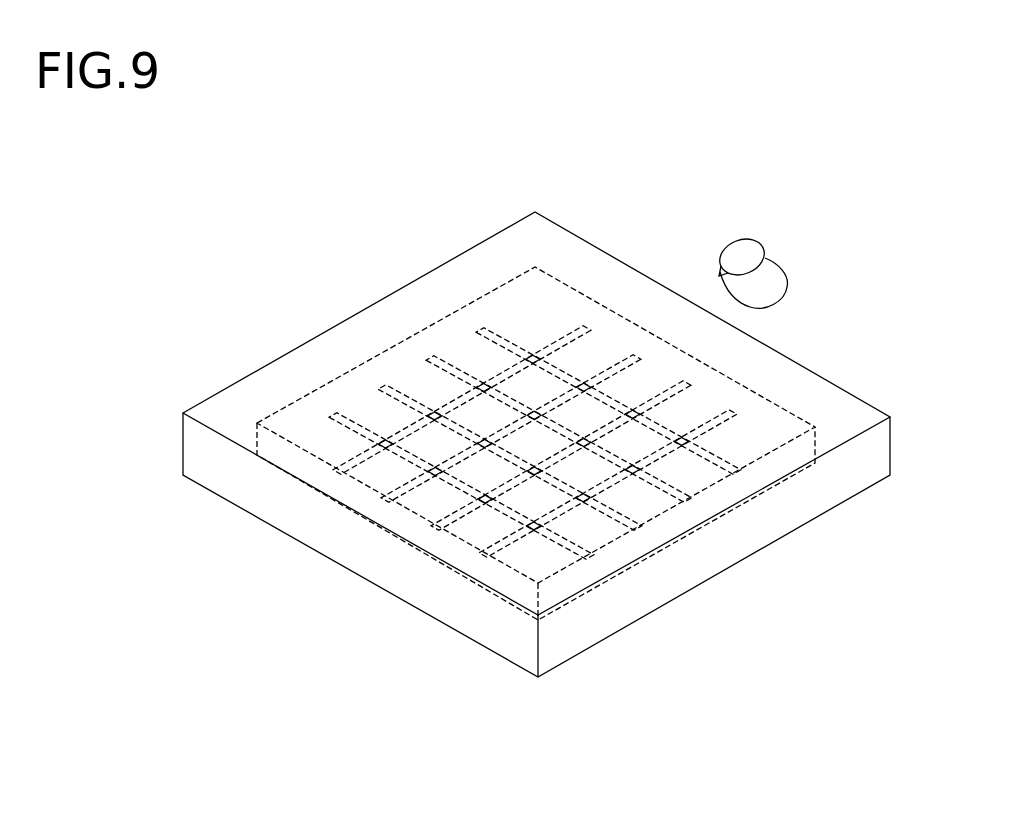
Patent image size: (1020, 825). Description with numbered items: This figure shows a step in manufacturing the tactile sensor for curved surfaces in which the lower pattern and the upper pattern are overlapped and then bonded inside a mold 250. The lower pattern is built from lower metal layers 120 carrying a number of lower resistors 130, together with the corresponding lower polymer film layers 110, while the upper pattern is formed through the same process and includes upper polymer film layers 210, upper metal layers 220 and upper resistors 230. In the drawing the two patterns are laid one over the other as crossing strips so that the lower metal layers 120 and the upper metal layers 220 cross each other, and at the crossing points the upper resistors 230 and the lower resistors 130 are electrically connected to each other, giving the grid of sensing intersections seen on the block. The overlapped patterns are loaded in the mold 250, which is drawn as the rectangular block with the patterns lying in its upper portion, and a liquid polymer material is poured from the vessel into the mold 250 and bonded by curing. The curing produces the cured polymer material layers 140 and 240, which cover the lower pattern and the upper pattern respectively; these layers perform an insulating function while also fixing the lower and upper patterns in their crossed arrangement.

The first electrode lines 110 is at (535, 519).
The lower metal layers 120 is at (510, 542).
The lower resistors 130 is at (643, 474).
The upper resistors 230 is at (683, 447).
The cured polymer material layer 140 is at (498, 443).
The cured polymer material layer 240 is at (298, 463).
The upper polymer film layers 210 is at (578, 484).
The upper metal layers 220 is at (637, 530).
The mold 250 is at (383, 570).